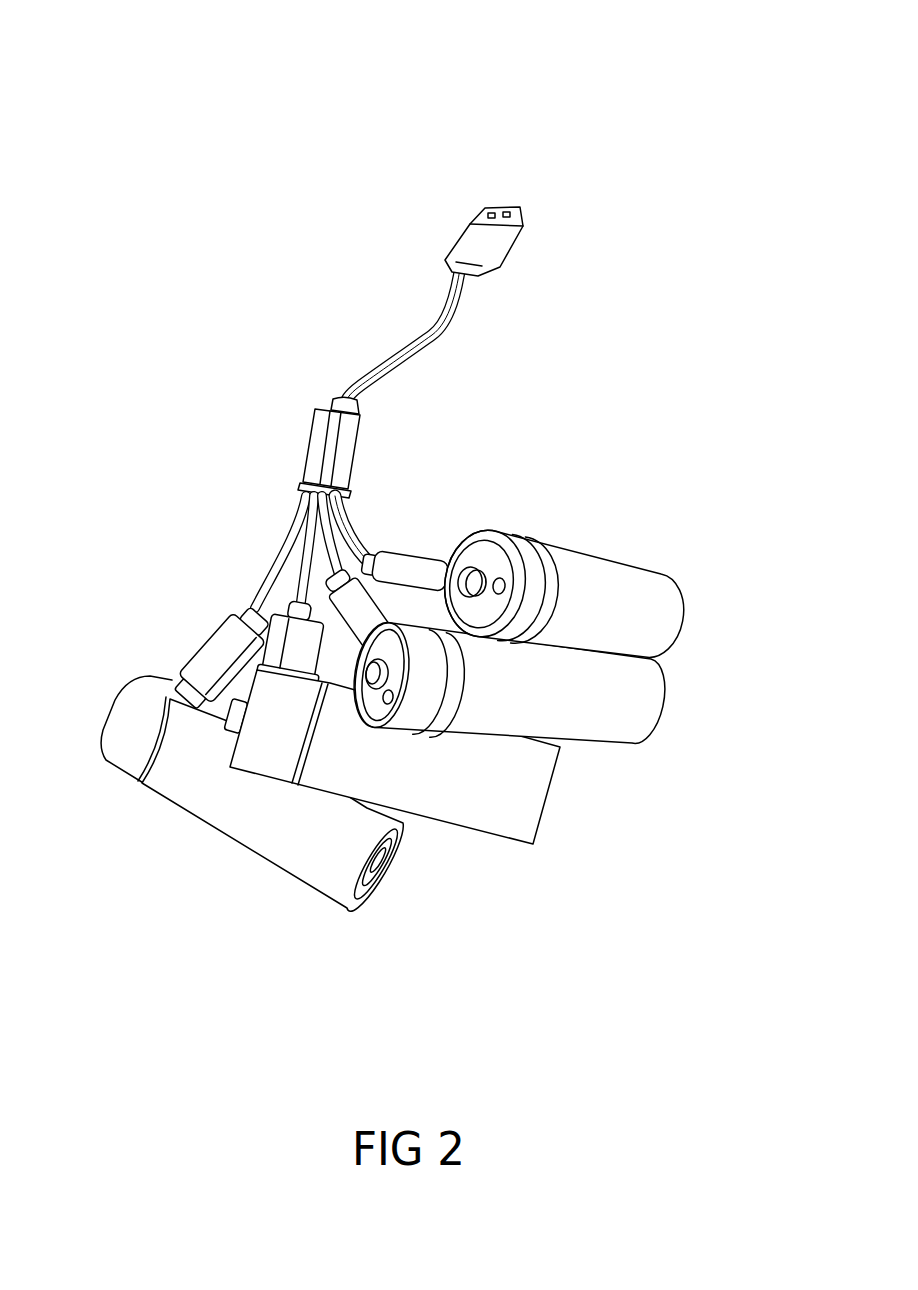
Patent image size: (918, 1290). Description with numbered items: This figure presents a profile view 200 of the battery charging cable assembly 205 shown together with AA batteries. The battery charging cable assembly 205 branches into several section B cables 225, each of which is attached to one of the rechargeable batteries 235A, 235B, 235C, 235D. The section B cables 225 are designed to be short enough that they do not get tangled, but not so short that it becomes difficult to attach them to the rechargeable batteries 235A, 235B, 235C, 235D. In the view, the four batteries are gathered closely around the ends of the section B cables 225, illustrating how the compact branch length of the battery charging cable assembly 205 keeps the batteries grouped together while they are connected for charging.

The profile view 200 is at (190, 90).
The battery charging cable assembly 205 is at (351, 338).
The section B cables 225 is at (357, 543).
The rechargeable battery 235A is at (190, 812).
The rechargeable battery 235B is at (500, 840).
The rechargeable battery 235C is at (592, 743).
The rechargeable battery 235D is at (663, 657).